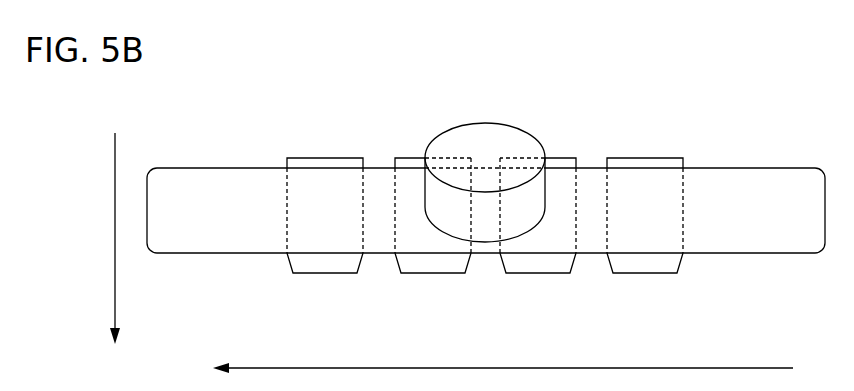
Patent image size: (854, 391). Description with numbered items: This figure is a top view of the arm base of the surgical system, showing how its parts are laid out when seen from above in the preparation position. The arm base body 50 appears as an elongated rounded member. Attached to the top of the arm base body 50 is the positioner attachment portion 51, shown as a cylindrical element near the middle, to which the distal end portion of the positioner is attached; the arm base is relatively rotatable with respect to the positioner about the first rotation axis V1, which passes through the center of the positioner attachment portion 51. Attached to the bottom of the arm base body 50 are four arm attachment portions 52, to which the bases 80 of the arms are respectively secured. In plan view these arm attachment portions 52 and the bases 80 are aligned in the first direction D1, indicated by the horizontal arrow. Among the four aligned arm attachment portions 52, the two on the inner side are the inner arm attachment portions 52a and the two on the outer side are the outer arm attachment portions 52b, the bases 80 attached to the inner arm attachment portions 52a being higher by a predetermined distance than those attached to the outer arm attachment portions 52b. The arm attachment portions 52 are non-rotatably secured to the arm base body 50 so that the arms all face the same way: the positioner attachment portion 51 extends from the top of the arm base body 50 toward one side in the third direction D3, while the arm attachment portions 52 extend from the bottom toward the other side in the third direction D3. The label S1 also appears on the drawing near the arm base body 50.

The arm base body 50 is at (752, 178).
The arm attachment portion 52 is at (482, 175).
The inner arm attachment portion 52a is at (405, 158).
The outer arm attachment portion 52b is at (297, 158).
The positioner attachment portion 51 is at (450, 140).
The first rotation axis V1 is at (485, 157).
The base 80 is at (315, 270).
The first direction D1 is at (519, 368).
The third direction D3 is at (115, 228).
The first surface S1 is at (750, 347).